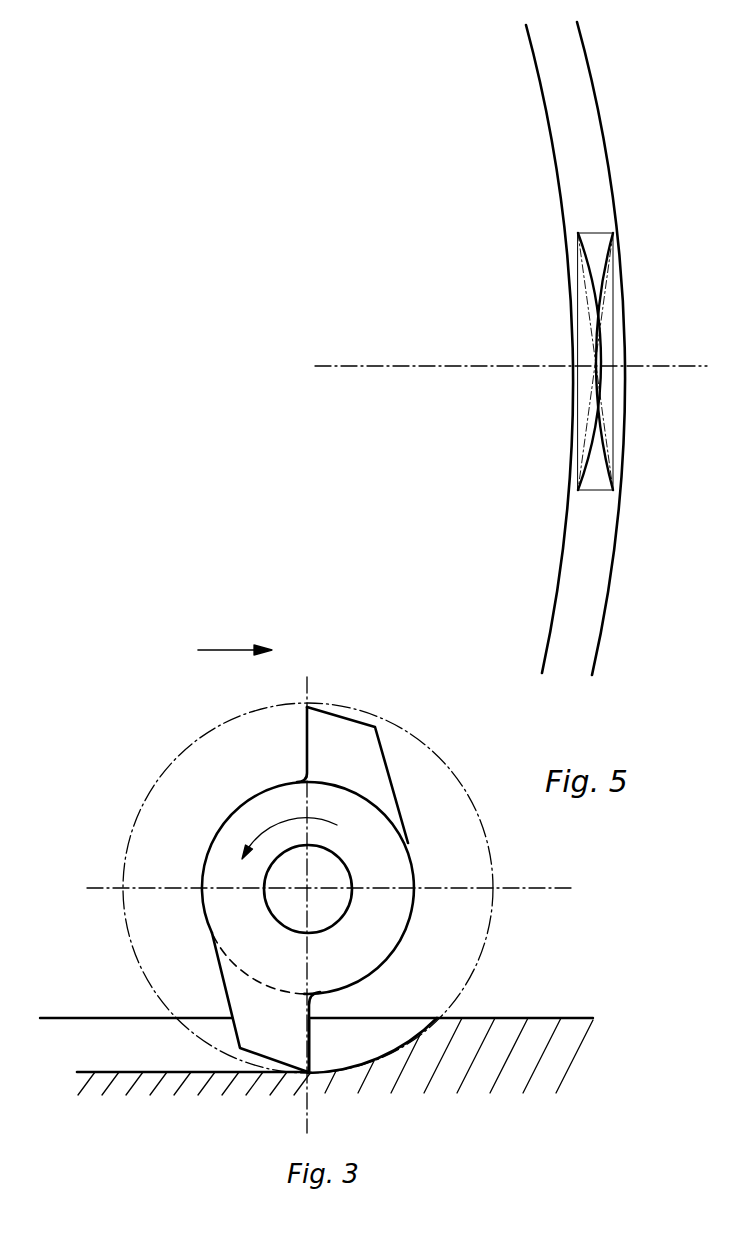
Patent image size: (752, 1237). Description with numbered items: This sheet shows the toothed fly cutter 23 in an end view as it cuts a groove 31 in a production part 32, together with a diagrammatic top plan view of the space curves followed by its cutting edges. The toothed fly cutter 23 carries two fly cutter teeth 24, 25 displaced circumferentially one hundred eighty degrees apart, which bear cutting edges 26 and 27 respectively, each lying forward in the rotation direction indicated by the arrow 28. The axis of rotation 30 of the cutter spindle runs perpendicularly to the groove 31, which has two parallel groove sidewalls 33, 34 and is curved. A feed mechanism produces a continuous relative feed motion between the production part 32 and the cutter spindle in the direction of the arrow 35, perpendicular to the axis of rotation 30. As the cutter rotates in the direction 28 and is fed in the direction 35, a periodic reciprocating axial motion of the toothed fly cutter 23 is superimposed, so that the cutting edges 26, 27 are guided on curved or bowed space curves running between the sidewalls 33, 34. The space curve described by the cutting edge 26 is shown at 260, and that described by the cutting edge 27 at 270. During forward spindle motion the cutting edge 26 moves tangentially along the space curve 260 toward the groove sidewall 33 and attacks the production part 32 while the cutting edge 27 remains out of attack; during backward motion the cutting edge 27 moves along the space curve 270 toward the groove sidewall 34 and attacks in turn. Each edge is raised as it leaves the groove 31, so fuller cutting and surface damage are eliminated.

In FIG. 3, the toothed fly cutter 23 is at (392, 865).
In FIG. 3, the fly cutter tooth 24 is at (368, 767).
In FIG. 3, the fly cutter tooth 25 is at (247, 997).
In FIG. 3, the cutting edge 26 is at (311, 1035).
In FIG. 3, the cutting edge 27 is at (298, 743).
In FIG. 3, the rotation direction 28 is at (285, 822).
In FIG. 5, the axis of rotation 30 is at (405, 367).
In FIG. 5, the groove 31 is at (586, 103).
In FIG. 3, the groove 31 is at (135, 1045).
In FIG. 3, the production part 32 is at (507, 1052).
In FIG. 5, the groove sidewall 33 is at (560, 557).
In FIG. 5, the groove sidewall 34 is at (615, 567).
In FIG. 3, the feed direction arrow 35 is at (233, 648).
In FIG. 5, the space curve 260 is at (585, 452).
In FIG. 5, the space curve 270 is at (620, 465).